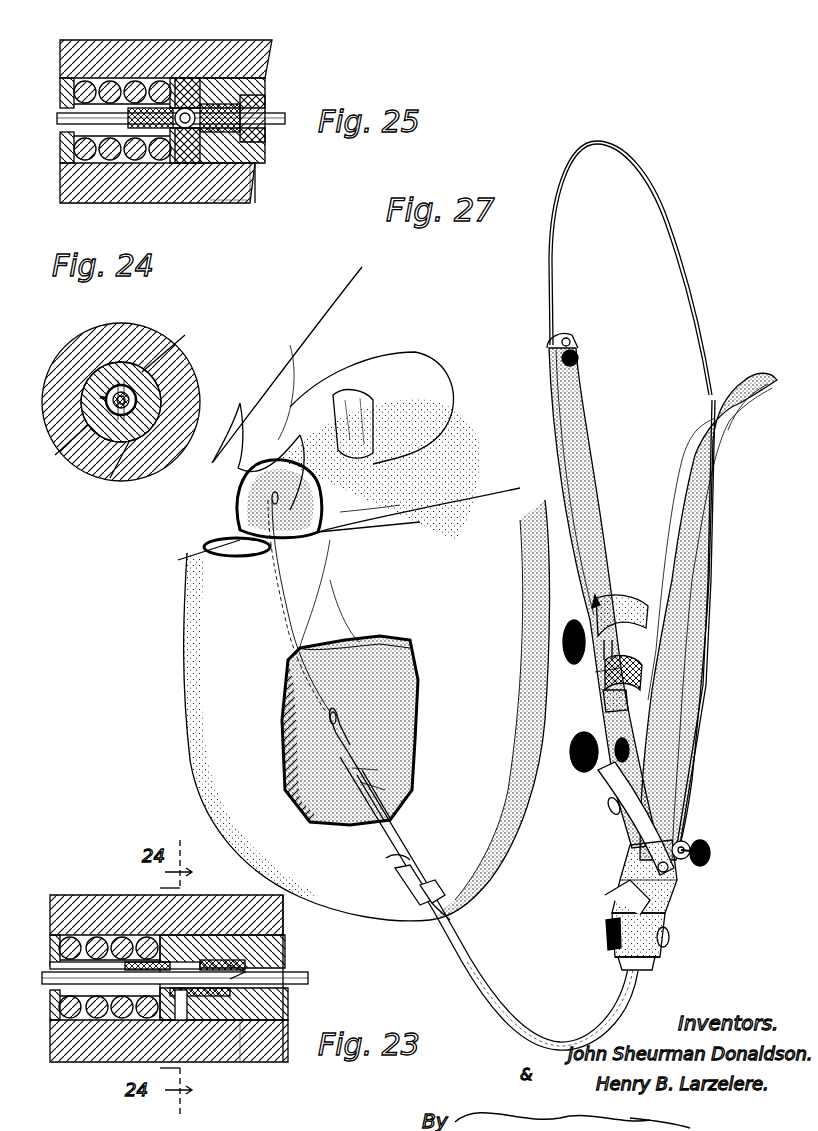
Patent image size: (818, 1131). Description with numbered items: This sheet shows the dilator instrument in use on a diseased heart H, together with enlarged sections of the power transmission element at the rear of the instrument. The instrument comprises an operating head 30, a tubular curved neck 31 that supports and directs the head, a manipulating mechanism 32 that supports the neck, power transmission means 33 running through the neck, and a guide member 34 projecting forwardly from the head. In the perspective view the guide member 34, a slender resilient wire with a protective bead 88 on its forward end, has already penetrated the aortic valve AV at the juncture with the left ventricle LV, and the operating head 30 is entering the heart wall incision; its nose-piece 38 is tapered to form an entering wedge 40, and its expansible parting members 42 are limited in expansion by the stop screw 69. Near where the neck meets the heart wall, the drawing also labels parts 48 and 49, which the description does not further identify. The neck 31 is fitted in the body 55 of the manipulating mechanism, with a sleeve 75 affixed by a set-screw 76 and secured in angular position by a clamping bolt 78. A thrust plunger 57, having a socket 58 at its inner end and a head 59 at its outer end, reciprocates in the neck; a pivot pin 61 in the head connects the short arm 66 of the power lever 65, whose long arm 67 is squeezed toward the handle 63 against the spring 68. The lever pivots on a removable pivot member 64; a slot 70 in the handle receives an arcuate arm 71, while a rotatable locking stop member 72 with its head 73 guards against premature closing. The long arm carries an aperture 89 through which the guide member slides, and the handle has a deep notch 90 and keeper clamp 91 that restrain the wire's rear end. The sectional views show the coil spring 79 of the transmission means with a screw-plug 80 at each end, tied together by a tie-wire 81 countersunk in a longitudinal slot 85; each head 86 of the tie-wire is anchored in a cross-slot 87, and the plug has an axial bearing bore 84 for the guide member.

In FIG. 27, the operating head 30 is at (416, 770).
In FIG. 25, the tubular curved neck 31 is at (95, 203).
In FIG. 24, the tubular curved neck 31 is at (152, 476).
In FIG. 23, the tubular curved neck 31 is at (70, 895).
In FIG. 27, the tubular curved neck 31 is at (540, 1022).
In FIG. 27, the manipulating mechanism 32 is at (622, 455).
In FIG. 25, the power transmission means 33 is at (60, 140).
In FIG. 24, the power transmission means 33 is at (68, 460).
In FIG. 23, the power transmission means 33 is at (48, 945).
In FIG. 25, the guide member 34 is at (68, 138).
In FIG. 24, the guide member 34 is at (105, 470).
In FIG. 23, the guide member 34 is at (318, 972).
In FIG. 27, the guide member 34 is at (320, 700).
In FIG. 27, the nose-piece 38 is at (335, 745).
In FIG. 27, the entering wedge 40 is at (330, 718).
In FIG. 27, the expansible parting members 42 is at (360, 790).
In FIG. 27, the coupling 48 is at (398, 872).
In FIG. 27, the fitting 49 is at (428, 905).
In FIG. 27, the body 55 is at (680, 905).
In FIG. 25, the thrust plunger 57 is at (258, 190).
In FIG. 23, the thrust plunger 57 is at (290, 1000).
In FIG. 27, the thrust plunger 57 is at (694, 845).
In FIG. 25, the screwthreaded socket 58 is at (232, 165).
In FIG. 23, the screwthreaded socket 58 is at (235, 1062).
In FIG. 27, the head 59 is at (712, 855).
In FIG. 23, the pivot pin 61 is at (115, 935).
In FIG. 27, the handle 63 is at (605, 560).
In FIG. 27, the removable pivot member 64 is at (612, 805).
In FIG. 27, the power lever 65 is at (680, 758).
In FIG. 27, the short arm 66 is at (700, 822).
In FIG. 27, the long manipulating arm 67 is at (706, 702).
In FIG. 27, the spring 68 is at (600, 700).
In FIG. 27, the screw 69 is at (598, 770).
In FIG. 27, the slot 70 is at (612, 598).
In FIG. 27, the arcuate arm 71 is at (632, 600).
In FIG. 27, the rotatable locking stop member 72 is at (568, 622).
In FIG. 27, the head 73 is at (582, 665).
In FIG. 27, the sleeve 75 is at (622, 957).
In FIG. 27, the set-screw 76 is at (670, 940).
In FIG. 27, the clamping bolt 78 is at (606, 922).
In FIG. 25, the coil spring 79 is at (165, 165).
In FIG. 23, the coil spring 79 is at (118, 1062).
In FIG. 25, the screw-plug 80 is at (268, 92).
In FIG. 24, the screw-plug 80 is at (148, 395).
In FIG. 23, the screw-plug 80 is at (225, 935).
In FIG. 25, the tie-wire 81 is at (135, 165).
In FIG. 24, the tie-wire 81 is at (136, 388).
In FIG. 23, the tie-wire 81 is at (62, 998).
In FIG. 24, the axial bearing bore 84 is at (138, 400).
In FIG. 23, the axial bearing bore 84 is at (262, 935).
In FIG. 25, the longitudinal slot 85 is at (180, 80).
In FIG. 25, the head 86 is at (178, 130).
In FIG. 23, the head 86 is at (185, 1062).
In FIG. 25, the cross-slot 87 is at (200, 80).
In FIG. 24, the cross-slot 87 is at (82, 345).
In FIG. 23, the cross-slot 87 is at (200, 936).
In FIG. 27, the protective bead 88 is at (270, 503).
In FIG. 27, the aperture 89 is at (700, 438).
In FIG. 27, the deep notch 90 is at (552, 350).
In FIG. 27, the keeper clamp 91 is at (580, 355).
In FIG. 27, the heart H is at (490, 875).
In FIG. 27, the left ventricle LV is at (485, 815).
In FIG. 27, the aortic valve AV is at (325, 532).